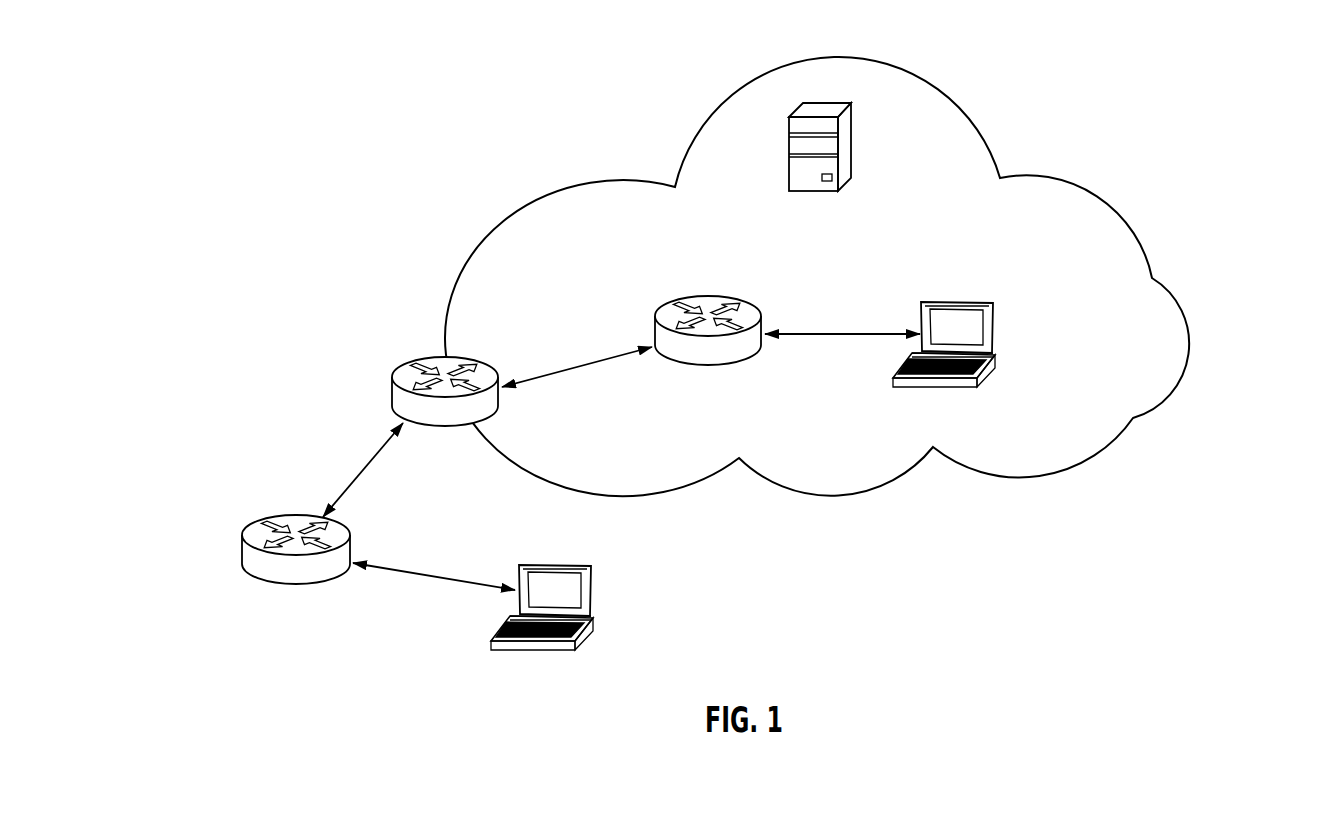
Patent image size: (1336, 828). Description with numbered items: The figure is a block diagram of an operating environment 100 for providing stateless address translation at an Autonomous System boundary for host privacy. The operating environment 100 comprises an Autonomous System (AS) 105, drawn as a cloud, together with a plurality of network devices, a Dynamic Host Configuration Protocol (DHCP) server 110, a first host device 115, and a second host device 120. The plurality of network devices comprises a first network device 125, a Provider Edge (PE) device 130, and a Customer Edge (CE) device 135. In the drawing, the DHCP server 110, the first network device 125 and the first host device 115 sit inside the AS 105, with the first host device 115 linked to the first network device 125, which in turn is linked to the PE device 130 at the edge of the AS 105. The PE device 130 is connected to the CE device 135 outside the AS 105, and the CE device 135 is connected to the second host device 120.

The operating environment 100 is at (358, 108).
The Autonomous System (AS) 105 is at (718, 103).
The Dynamic Host Configuration Protocol (DHCP) server 110 is at (824, 108).
The first host device 115 is at (993, 330).
The second host device 120 is at (588, 592).
The first network device 125 is at (657, 330).
The Provider Edge (PE) device 130 is at (392, 396).
The Customer Edge (CE) device 135 is at (242, 552).